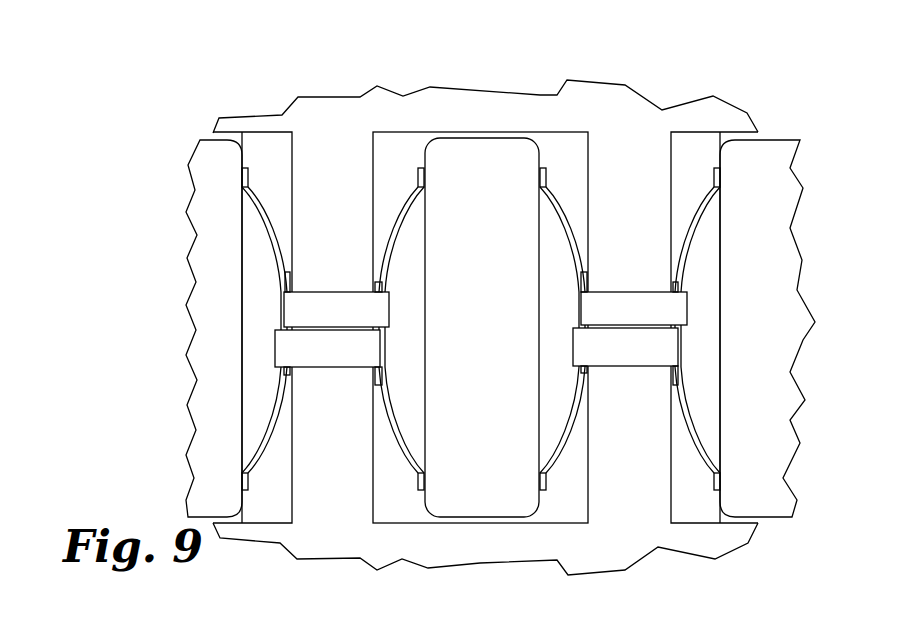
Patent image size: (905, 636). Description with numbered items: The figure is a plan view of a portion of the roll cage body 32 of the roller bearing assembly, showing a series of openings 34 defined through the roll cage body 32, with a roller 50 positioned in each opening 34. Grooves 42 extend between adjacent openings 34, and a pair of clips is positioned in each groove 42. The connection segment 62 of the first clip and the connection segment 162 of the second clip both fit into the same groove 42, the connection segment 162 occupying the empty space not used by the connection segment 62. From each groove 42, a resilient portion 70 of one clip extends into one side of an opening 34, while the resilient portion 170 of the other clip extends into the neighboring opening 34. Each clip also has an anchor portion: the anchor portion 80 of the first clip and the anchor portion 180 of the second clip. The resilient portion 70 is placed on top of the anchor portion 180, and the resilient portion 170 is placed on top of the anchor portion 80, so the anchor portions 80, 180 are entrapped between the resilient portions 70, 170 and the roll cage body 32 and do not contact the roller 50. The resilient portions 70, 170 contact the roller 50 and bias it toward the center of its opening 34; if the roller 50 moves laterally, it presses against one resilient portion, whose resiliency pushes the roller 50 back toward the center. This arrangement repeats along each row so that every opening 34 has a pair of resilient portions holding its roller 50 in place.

The roll cage body 32 is at (637, 142).
The opening 34 is at (261, 160).
The roller 50 is at (208, 138).
The resilient portion 170 is at (278, 222).
The resilient portion 70 is at (390, 246).
The groove 42 is at (356, 367).
The connection segment 62 is at (485, 309).
The connection segment 162 is at (476, 347).
The anchor portion 180 is at (377, 283).
The anchor portion 80 is at (289, 376).